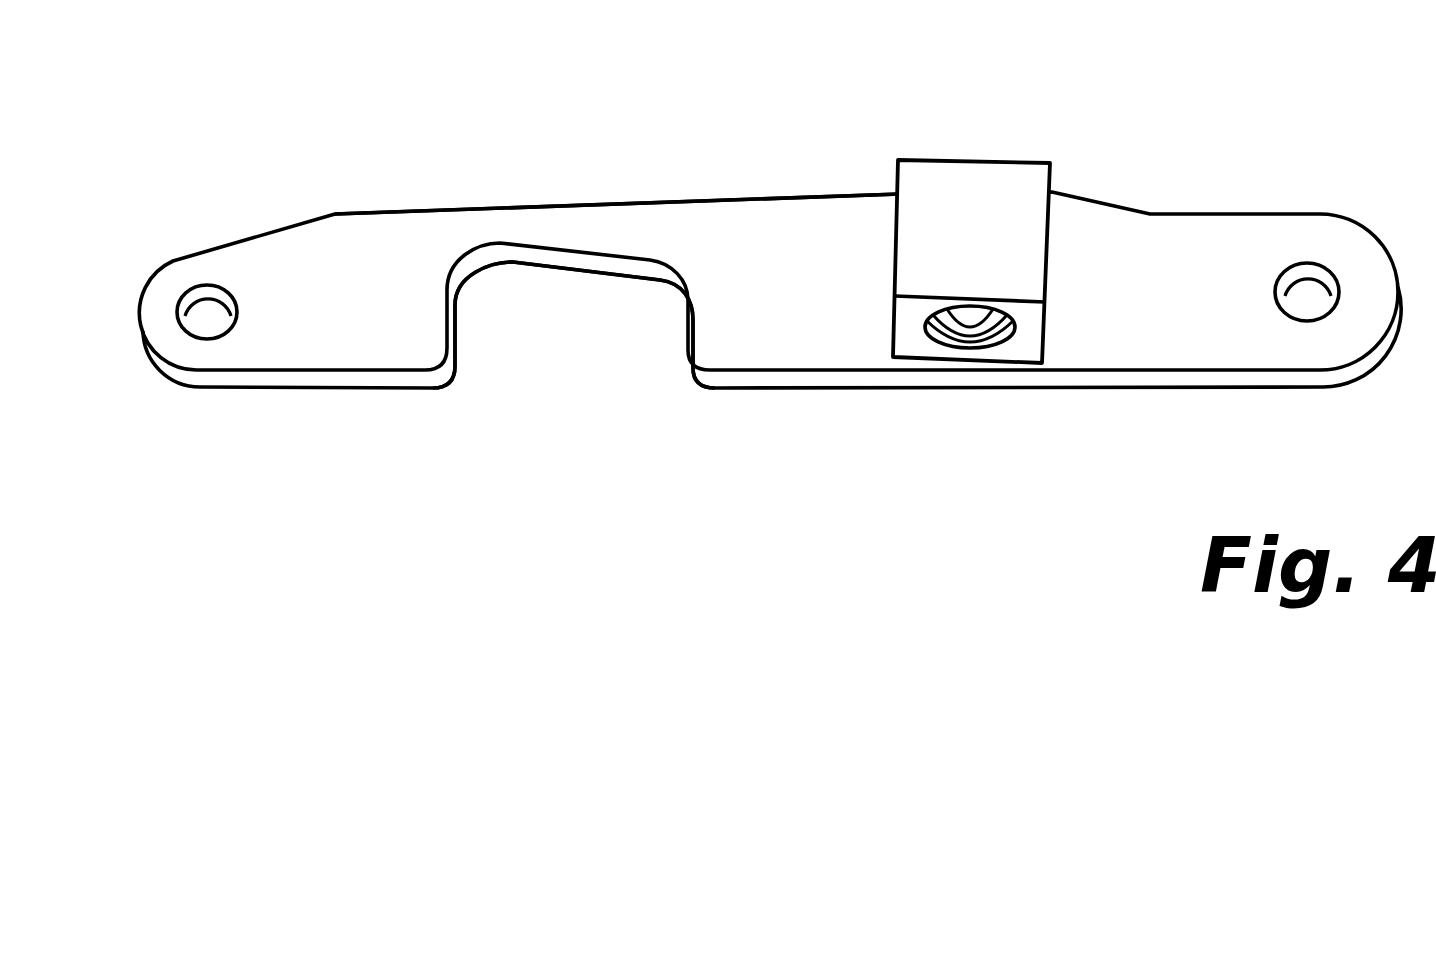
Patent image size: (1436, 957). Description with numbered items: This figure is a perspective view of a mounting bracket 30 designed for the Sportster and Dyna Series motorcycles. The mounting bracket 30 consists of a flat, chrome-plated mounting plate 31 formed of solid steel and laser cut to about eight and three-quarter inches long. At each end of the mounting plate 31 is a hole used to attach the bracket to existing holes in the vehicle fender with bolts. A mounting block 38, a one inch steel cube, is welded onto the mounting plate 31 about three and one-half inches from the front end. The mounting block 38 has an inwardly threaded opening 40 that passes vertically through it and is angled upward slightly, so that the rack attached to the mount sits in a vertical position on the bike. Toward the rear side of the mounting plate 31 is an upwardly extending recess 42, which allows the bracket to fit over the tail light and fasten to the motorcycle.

The mounting bracket 30 is at (360, 213).
The mounting plate 31 is at (643, 202).
The mounting block 38 is at (995, 185).
The threaded opening 40 is at (980, 340).
The recess 42 is at (553, 338).